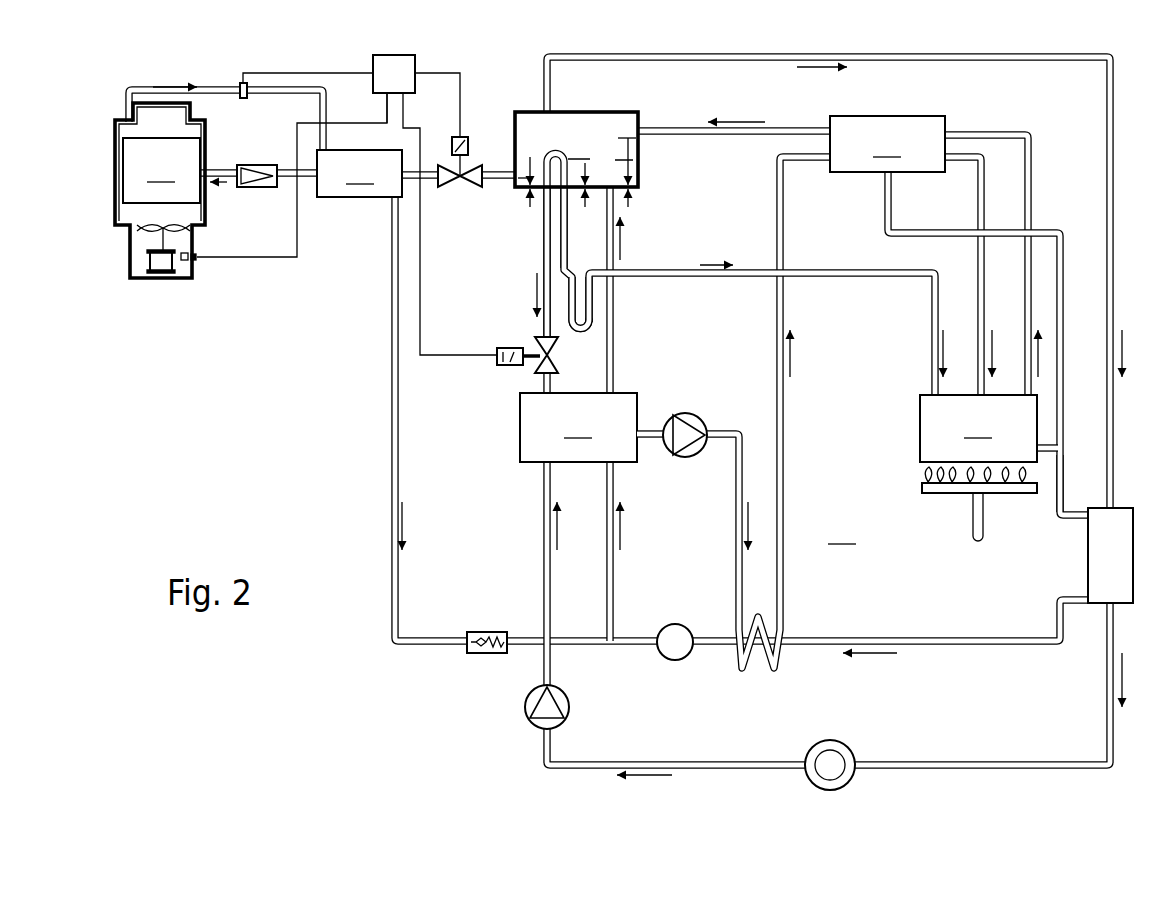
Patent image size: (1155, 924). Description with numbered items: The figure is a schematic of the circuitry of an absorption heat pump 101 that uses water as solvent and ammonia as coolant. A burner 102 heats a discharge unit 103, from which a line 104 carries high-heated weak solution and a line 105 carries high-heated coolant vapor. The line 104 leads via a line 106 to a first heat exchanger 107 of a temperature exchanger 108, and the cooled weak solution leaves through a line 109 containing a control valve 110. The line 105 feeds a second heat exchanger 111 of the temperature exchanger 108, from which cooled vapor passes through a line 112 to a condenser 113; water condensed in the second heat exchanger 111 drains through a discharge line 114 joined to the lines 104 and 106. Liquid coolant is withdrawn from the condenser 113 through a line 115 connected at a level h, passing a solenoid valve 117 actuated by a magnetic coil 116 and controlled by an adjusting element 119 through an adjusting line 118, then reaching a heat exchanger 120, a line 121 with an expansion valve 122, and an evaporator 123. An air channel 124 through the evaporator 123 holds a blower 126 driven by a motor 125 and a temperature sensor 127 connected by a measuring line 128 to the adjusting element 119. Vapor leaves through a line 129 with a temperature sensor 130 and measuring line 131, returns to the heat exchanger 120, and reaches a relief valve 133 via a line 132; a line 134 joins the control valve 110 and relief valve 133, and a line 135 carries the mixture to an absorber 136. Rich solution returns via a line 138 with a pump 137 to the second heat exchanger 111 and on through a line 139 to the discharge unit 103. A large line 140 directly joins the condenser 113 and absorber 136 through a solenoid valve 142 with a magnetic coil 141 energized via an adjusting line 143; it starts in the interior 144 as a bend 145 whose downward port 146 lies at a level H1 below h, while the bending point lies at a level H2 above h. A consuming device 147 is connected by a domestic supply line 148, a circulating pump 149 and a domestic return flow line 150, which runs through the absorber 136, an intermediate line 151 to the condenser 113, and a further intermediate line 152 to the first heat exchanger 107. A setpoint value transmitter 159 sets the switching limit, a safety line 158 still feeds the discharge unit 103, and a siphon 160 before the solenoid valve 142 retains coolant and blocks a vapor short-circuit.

The absorption heat pump 101 is at (842, 532).
The burner 102 is at (938, 493).
The discharge unit 103 is at (978, 428).
The line 104 is at (1057, 437).
The line 105 is at (1029, 198).
The line 106 is at (1062, 487).
The first heat exchanger 107 is at (1122, 516).
The temperature exchanger 108 is at (991, 336).
The line 109 is at (913, 640).
The control valve 110 is at (663, 627).
The second heat exchanger 111 is at (887, 144).
The line 112 is at (743, 140).
The condenser 113 is at (634, 106).
The discharge line 114 is at (885, 198).
The line 115 is at (490, 183).
The magnetic coil 116 is at (465, 135).
The solenoid valve 117 is at (474, 167).
The adjusting line 118 is at (462, 80).
The adjusting element 119 is at (369, 65).
The heat exchanger 120 is at (359, 173).
The line 121 is at (308, 178).
The expansion valve 122 is at (253, 188).
The evaporator 123 is at (161, 170).
The air channel 124 is at (143, 267).
The motor 125 is at (163, 273).
The blower 126 is at (132, 231).
The temperature sensor 127 is at (192, 261).
The measuring line 128 is at (280, 258).
The line 129 is at (131, 100).
The temperature sensor 130 is at (242, 83).
The measuring line 131 is at (272, 75).
The line 132 is at (392, 463).
The relief valve 133 is at (476, 631).
The line 134 is at (523, 637).
The line 135 is at (607, 600).
The absorber 136 is at (578, 427).
The pump 137 is at (695, 417).
The line 138 is at (783, 400).
The line 139 is at (978, 253).
The line 140 is at (546, 242).
The magnetic coil 141 is at (507, 366).
The solenoid valve 142 is at (557, 370).
The adjusting line 143 is at (421, 308).
The interior 144 is at (638, 147).
The bend 145 is at (553, 148).
The port 146 is at (571, 188).
The consuming device 147 is at (833, 757).
The domestic supply line 148 is at (1010, 762).
The circulating pump 149 is at (526, 703).
The domestic return flow line 150 is at (551, 668).
The intermediate line 151 is at (614, 365).
The intermediate line 152 is at (732, 62).
The safety line 158 is at (838, 280).
The setpoint value transmitter 159 is at (380, 90).
The siphon 160 is at (583, 307).
The level H1 is at (600, 182).
The level H2 is at (638, 172).
The level h is at (523, 188).